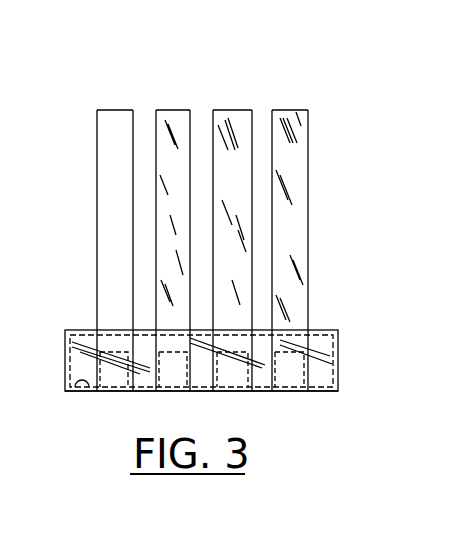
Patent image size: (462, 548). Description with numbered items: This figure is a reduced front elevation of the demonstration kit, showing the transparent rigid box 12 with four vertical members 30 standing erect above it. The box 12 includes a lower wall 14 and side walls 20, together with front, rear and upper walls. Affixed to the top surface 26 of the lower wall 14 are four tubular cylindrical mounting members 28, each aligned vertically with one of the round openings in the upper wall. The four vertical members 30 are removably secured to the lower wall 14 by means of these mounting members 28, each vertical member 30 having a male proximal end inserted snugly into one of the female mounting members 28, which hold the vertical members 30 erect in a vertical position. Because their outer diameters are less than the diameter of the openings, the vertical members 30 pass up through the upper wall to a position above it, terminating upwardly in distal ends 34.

The transparent rigid box 12 is at (327, 375).
The lower wall 14 is at (318, 397).
The side walls 20 is at (382, 342).
The top surface 26 is at (82, 392).
The mounting member 28 is at (252, 378).
The vertical member 30 is at (300, 140).
The distal end 34 is at (288, 110).